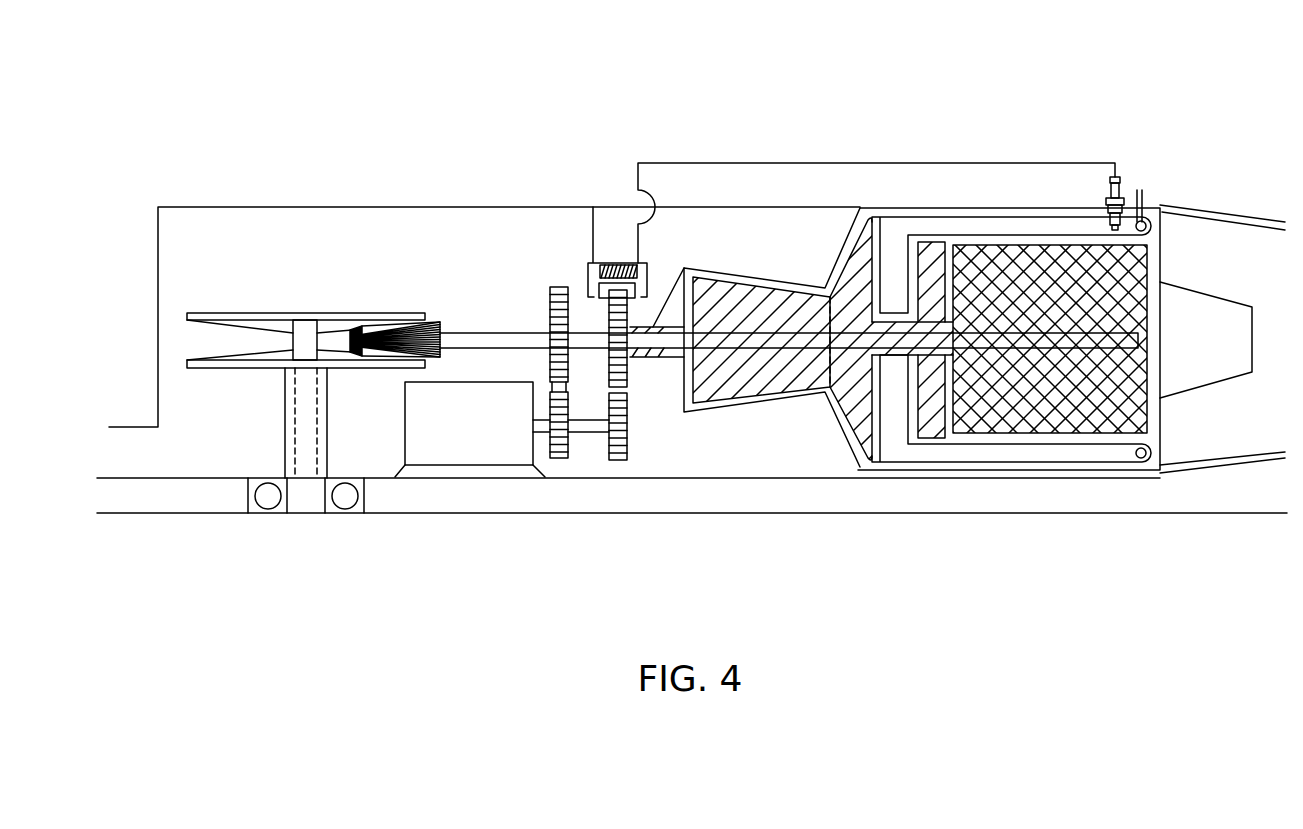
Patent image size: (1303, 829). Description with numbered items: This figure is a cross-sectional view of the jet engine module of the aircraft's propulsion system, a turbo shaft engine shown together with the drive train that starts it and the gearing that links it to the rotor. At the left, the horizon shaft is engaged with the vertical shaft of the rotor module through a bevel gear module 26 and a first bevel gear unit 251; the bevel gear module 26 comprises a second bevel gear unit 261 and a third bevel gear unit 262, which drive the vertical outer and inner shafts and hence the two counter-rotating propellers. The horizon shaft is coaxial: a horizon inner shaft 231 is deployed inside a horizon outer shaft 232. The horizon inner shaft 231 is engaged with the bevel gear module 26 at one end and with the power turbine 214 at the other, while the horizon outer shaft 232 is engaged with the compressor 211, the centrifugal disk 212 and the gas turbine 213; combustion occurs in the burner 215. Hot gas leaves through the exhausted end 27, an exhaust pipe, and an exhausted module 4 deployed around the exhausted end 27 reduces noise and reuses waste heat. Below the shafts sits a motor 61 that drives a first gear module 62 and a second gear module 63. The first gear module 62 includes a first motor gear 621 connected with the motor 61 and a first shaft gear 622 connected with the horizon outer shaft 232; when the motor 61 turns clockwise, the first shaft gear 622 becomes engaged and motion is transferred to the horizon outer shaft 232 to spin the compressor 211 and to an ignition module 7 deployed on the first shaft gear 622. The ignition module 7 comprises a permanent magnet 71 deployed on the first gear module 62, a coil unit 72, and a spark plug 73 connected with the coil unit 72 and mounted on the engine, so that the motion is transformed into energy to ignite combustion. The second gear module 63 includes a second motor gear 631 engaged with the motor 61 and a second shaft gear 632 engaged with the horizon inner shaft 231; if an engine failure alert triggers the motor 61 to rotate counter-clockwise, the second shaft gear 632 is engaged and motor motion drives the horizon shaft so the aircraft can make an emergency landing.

The exhausted module 4 is at (1200, 433).
The ignition module 7 is at (585, 161).
The bevel gear module 26 is at (232, 354).
The second bevel gear unit 261 is at (214, 362).
The third bevel gear unit 262 is at (262, 316).
The first bevel gear unit 251 is at (381, 318).
The horizon inner shaft 231 is at (482, 342).
The horizon outer shaft 232 is at (690, 268).
The motor 61 is at (463, 455).
The first gear module 62 is at (725, 451).
The first motor gear 621 is at (628, 437).
The first shaft gear 622 is at (628, 375).
The second gear module 63 is at (456, 297).
The second motor gear 631 is at (550, 388).
The second shaft gear 632 is at (548, 298).
The permanent magnet 71 is at (593, 263).
The coil unit 72 is at (630, 265).
The spark plug 73 is at (1118, 172).
The compressor 211 is at (778, 300).
The centrifugal disk 212 is at (860, 273).
The gas turbine 213 is at (938, 268).
The power turbine 214 is at (1018, 268).
The burner 215 is at (1080, 223).
The exhausted end 27 is at (1192, 287).